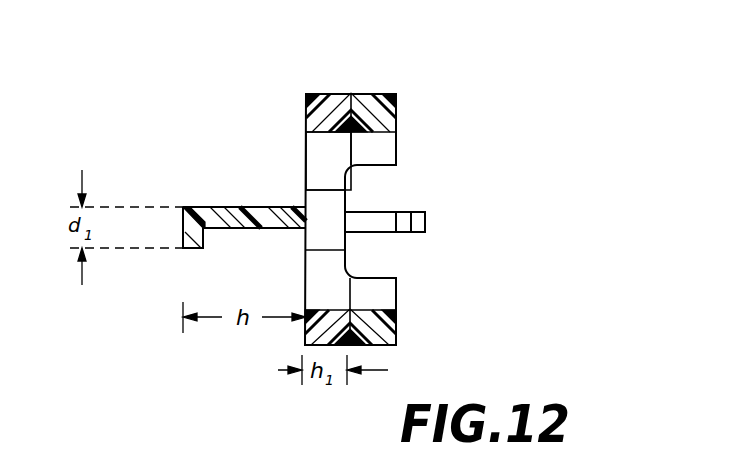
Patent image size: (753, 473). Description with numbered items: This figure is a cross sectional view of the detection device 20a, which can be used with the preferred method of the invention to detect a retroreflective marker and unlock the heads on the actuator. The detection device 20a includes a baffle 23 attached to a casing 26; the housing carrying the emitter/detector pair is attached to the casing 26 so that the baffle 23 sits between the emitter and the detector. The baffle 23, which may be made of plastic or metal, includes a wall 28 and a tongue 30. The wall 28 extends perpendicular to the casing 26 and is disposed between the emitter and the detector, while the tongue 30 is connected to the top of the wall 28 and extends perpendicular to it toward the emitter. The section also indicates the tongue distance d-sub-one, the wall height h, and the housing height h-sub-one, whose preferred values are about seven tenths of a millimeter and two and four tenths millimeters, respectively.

The detection device 20a is at (441, 75).
The casing 26 is at (318, 156).
The baffle 23 is at (380, 217).
The wall 28 is at (252, 207).
The tongue 30 is at (190, 248).